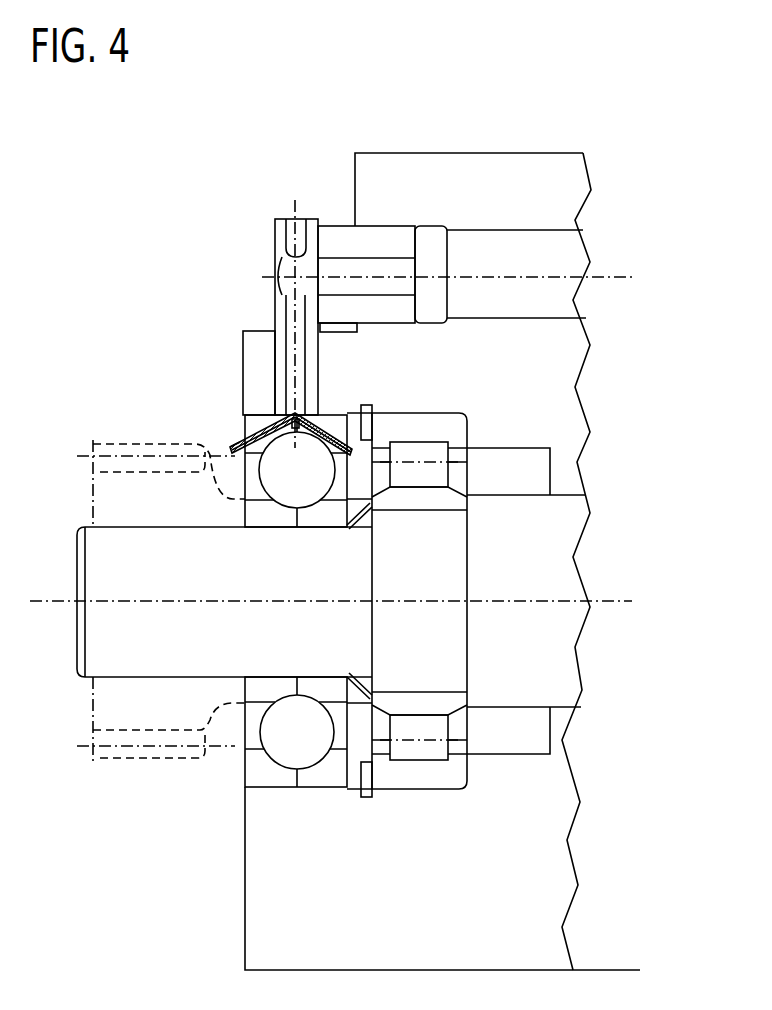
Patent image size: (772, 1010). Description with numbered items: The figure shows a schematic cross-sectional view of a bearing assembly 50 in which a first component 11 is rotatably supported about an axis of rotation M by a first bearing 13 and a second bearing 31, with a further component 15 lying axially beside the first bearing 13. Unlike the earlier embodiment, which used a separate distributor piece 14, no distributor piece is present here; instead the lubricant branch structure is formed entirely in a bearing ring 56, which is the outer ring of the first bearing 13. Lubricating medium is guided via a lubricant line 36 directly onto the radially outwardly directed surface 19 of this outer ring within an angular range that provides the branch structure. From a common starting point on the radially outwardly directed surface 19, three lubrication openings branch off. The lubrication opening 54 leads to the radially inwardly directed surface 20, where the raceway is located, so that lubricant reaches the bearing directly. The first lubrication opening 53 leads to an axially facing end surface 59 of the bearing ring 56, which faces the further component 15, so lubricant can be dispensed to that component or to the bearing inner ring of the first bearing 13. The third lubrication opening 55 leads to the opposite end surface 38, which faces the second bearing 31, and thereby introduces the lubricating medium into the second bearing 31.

The bearing assembly 50 is at (237, 156).
The distributor piece 14 is at (576, 408).
The lubricant line 36 is at (292, 313).
The radially outwardly directed surface 19 is at (262, 413).
The lubrication opening 54 is at (295, 413).
The first lubrication opening 53 is at (250, 436).
The end surface 59 is at (230, 450).
The third lubrication opening 55 is at (333, 440).
The bearing ring 56 is at (326, 413).
The end surface 38 is at (350, 432).
The radially inwardly directed surface 20 is at (323, 445).
The first bearing 13 is at (274, 782).
The second bearing 31 is at (417, 758).
The first component 11 is at (90, 640).
The axis of rotation M is at (613, 597).
The further component 15 is at (105, 505).